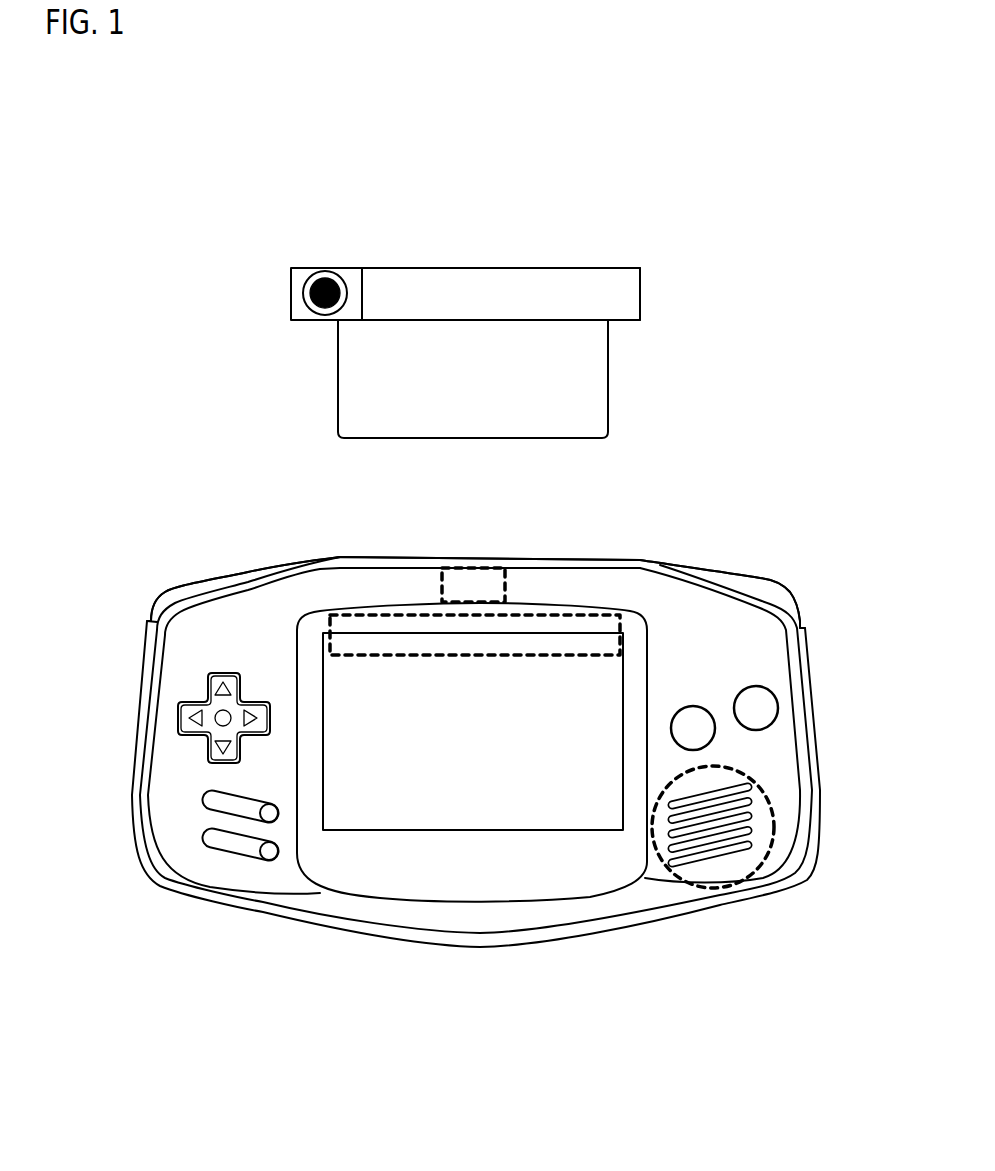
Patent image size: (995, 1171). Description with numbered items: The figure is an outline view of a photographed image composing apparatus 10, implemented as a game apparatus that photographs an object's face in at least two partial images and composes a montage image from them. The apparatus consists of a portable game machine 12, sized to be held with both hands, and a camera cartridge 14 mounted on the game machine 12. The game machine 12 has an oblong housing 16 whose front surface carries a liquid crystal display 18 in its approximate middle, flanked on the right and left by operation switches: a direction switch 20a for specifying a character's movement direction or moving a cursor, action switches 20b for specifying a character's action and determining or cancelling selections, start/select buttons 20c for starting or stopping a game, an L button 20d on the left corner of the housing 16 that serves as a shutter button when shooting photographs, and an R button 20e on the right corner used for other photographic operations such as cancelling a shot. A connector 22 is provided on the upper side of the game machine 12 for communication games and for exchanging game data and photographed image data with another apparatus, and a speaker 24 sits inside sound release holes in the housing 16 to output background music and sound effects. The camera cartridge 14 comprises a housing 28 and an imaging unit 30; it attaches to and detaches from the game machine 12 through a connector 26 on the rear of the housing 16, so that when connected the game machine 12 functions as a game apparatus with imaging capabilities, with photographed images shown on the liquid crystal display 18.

The photographed image composing apparatus 10 is at (192, 183).
The game machine 12 is at (640, 948).
The camera cartridge 14 is at (648, 261).
The housing 16 is at (547, 587).
The liquid crystal display 18 is at (528, 806).
The direction switch 20a is at (213, 673).
The action switches 20b is at (697, 706).
The start/select buttons 20c is at (210, 812).
The L button 20d is at (178, 584).
The R button 20e is at (790, 600).
The connector 22 is at (472, 587).
The speaker 24 is at (763, 793).
The connector 26 is at (383, 612).
The housing 28 is at (512, 293).
The imaging unit 30 is at (320, 270).